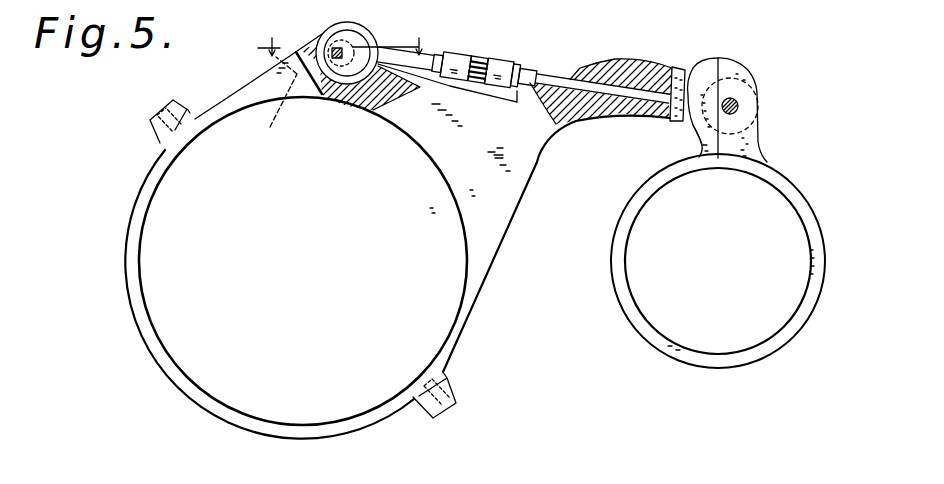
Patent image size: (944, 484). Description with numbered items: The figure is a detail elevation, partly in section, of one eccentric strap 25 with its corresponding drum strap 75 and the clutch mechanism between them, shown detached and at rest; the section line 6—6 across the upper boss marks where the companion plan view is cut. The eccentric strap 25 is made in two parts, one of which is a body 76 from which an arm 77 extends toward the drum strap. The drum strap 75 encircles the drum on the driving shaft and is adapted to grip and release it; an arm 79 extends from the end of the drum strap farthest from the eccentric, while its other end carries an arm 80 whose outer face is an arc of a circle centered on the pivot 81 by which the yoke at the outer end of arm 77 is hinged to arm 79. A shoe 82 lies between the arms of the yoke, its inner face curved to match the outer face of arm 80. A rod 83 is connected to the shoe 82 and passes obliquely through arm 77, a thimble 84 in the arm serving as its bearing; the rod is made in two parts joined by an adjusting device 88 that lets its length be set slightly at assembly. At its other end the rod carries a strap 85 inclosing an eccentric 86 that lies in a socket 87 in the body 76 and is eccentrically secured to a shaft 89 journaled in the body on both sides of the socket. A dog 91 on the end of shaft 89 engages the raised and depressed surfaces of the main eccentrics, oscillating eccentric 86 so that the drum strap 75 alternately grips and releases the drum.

The section line 6— 6 is at (344, 47).
The eccentric strap 25 is at (184, 377).
The drum strap 75 is at (808, 218).
The body 76 is at (432, 202).
The arm 77 is at (623, 62).
The arm 79 is at (751, 136).
The arm 80 is at (703, 124).
The pivot 81 is at (739, 103).
The shoe 82 is at (697, 70).
The rod 83 is at (541, 68).
The thimble 84 is at (673, 66).
The strap 85 is at (362, 27).
The eccentric 86 is at (358, 44).
The socket 87 is at (326, 47).
The adjusting device 88 is at (462, 60).
The shaft 89 is at (316, 97).
The dog 91 is at (281, 102).